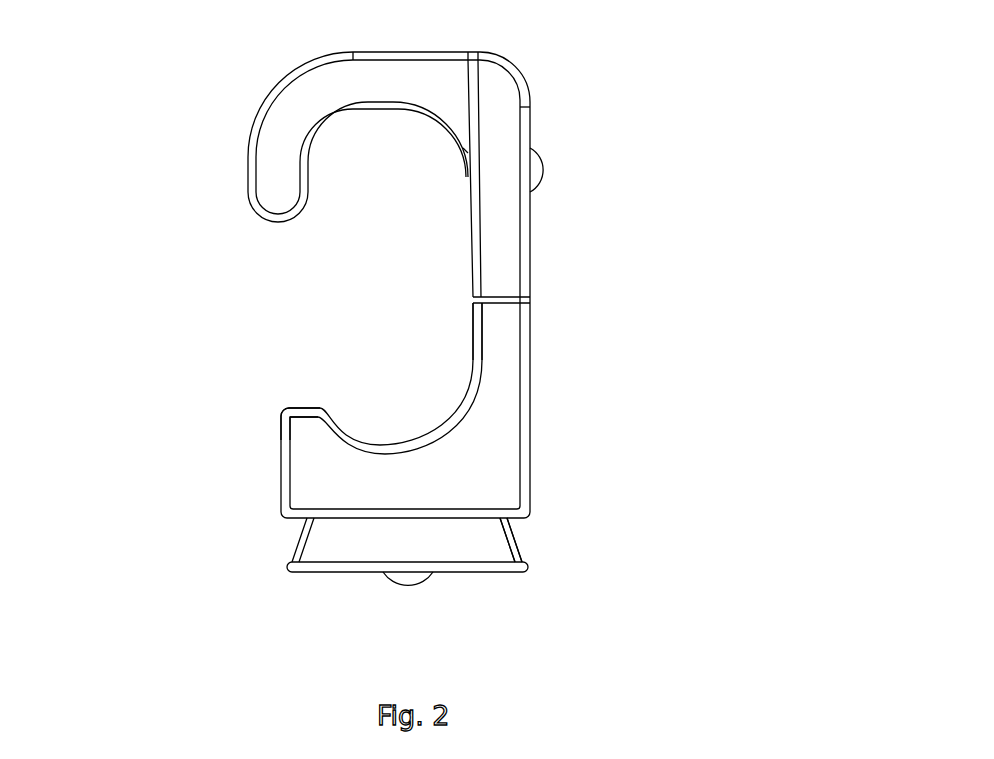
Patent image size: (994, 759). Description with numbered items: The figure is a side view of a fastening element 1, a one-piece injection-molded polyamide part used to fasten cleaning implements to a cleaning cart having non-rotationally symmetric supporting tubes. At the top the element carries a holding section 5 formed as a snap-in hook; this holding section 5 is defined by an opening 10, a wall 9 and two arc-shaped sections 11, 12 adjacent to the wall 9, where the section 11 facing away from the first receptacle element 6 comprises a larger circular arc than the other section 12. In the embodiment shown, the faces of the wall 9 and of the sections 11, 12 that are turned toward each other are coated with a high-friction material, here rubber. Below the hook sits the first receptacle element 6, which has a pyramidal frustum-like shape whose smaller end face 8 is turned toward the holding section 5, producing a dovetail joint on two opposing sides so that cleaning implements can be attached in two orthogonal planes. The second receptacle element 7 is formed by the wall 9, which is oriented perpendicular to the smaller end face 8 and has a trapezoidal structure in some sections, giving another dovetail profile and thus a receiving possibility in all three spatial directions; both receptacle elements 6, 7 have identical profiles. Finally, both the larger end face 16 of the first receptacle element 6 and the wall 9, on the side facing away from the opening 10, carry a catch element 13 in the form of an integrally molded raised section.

The fastening element 1 is at (152, 93).
The holding section 5 is at (245, 335).
The first receptacle element 6 is at (337, 547).
The second receptacle element 7 is at (497, 267).
The smaller end face 8 is at (483, 518).
The wall 9 is at (505, 332).
The opening 10 is at (262, 269).
The arc-shaped section 11 is at (302, 127).
The arc-shaped section 12 is at (312, 433).
The catch element 13 is at (540, 170).
The larger end face 16 is at (457, 573).